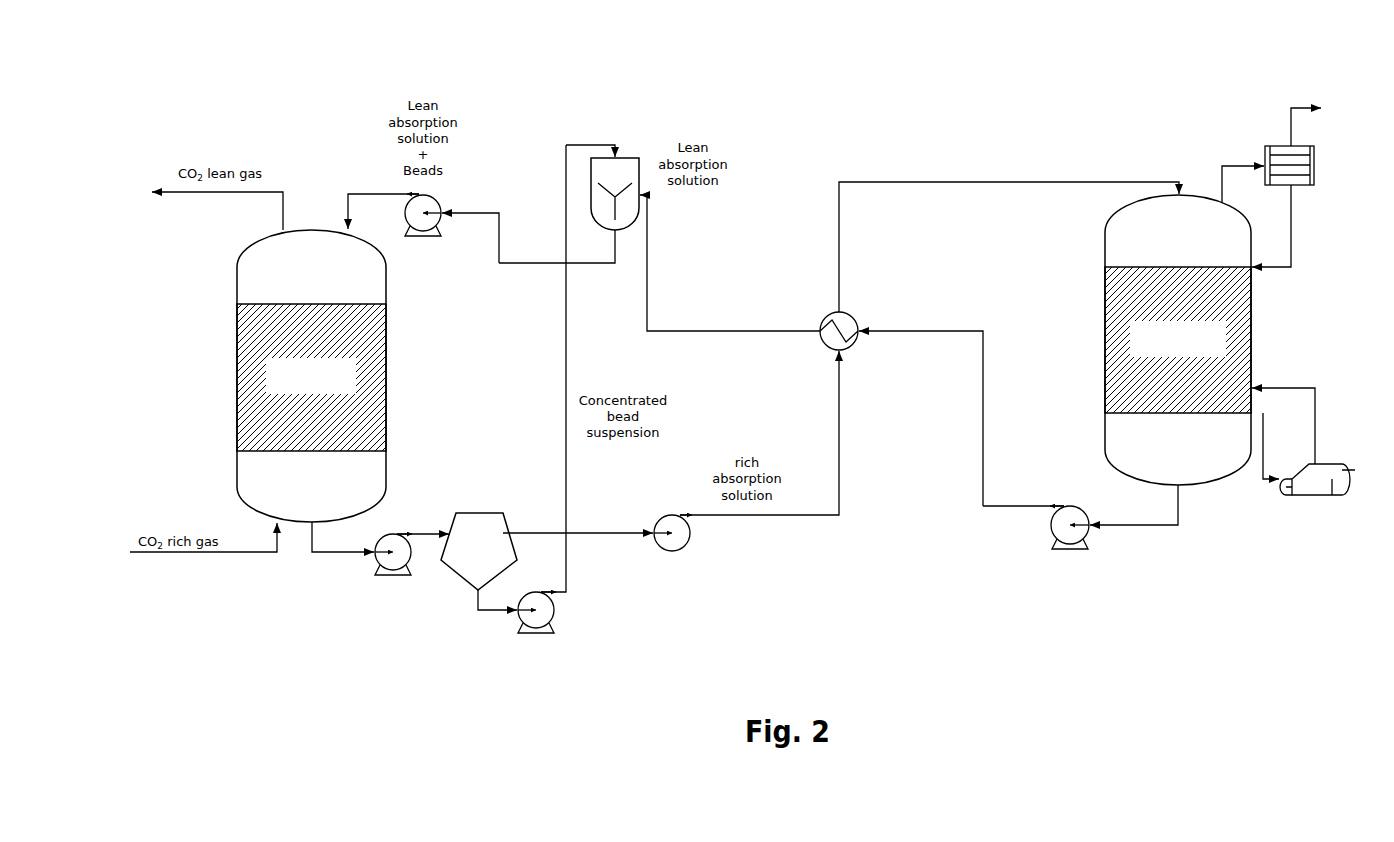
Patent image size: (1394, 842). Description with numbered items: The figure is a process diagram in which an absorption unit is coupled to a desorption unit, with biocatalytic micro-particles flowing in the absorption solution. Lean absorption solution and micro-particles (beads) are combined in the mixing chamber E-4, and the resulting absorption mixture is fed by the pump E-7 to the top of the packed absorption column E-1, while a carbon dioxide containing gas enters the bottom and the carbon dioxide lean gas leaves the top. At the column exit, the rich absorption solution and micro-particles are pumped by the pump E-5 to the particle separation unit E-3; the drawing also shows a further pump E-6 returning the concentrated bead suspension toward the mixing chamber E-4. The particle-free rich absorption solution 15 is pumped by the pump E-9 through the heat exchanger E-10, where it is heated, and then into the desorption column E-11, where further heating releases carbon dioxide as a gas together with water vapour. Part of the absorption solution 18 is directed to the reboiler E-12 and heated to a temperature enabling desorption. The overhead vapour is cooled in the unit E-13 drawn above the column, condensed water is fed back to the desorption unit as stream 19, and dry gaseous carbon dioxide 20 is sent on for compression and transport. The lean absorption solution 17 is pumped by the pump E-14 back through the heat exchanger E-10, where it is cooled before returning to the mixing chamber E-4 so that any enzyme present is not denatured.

The packed column E-1 is at (332, 376).
The particle separation unit E-3 is at (479, 551).
The mixing chamber E-4 is at (659, 238).
The pump E-5 is at (380, 559).
The pump E-6 is at (522, 405).
The pump E-7 is at (423, 233).
The pump E-9 is at (746, 465).
The heat exchanger E-10 is at (999, 344).
The desorption column E-11 is at (1205, 340).
The reboiler E-12 is at (1317, 499).
The condenser E-13 is at (1288, 174).
The pump E-14 is at (1036, 545).
The absorption solution without micro-particles 15 is at (578, 522).
The lean absorption solution 17 is at (1134, 505).
The part of the absorption solution 18 is at (1283, 433).
The condensed water fed back to the desorption unit 19 is at (1299, 226).
The dry gaseous CO2 20 is at (1323, 109).